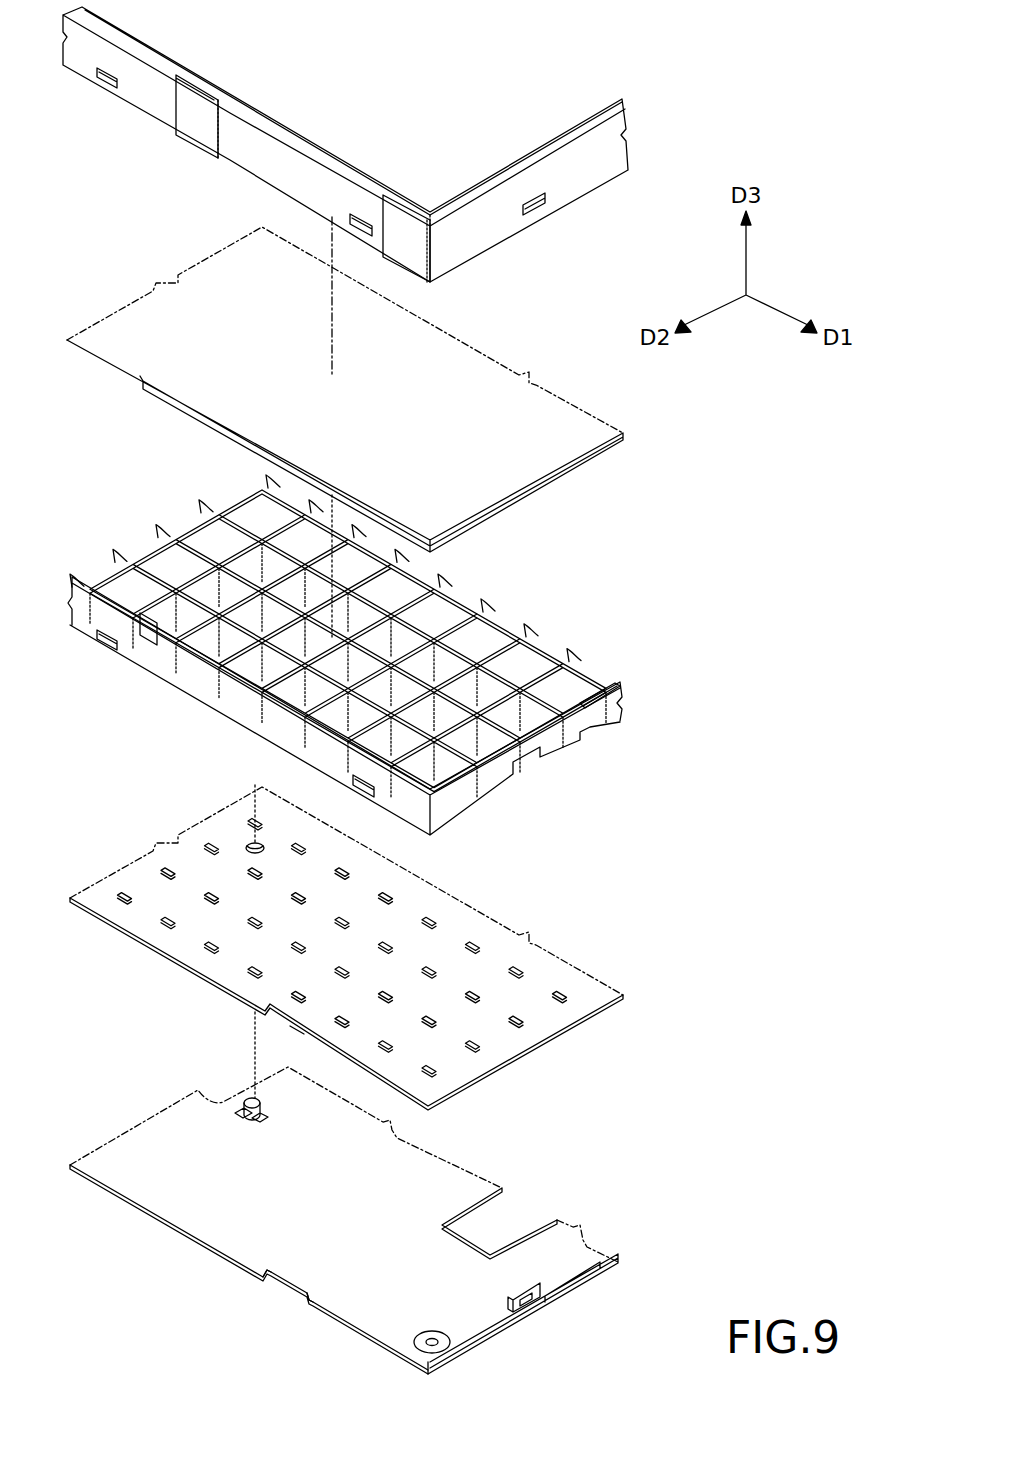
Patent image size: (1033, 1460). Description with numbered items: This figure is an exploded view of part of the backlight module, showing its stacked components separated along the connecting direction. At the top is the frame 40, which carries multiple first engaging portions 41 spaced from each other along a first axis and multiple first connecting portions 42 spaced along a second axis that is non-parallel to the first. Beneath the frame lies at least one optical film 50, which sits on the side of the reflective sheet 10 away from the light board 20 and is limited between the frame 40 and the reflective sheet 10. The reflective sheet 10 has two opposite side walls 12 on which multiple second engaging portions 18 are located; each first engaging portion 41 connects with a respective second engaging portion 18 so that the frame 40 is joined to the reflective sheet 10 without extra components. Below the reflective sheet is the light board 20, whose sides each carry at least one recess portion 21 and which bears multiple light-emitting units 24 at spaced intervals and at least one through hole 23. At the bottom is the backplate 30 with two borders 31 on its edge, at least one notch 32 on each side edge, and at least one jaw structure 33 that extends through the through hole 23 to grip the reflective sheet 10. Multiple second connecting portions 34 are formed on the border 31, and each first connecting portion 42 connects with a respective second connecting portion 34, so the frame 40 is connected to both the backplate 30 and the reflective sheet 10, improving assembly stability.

The reflective sheet 10 is at (588, 634).
The side walls 12 is at (163, 665).
The second engaging portions 18 is at (98, 640).
The light board 20 is at (575, 945).
The recess portion 21 is at (300, 1022).
The through hole 23 is at (254, 842).
The light-emitting units 24 is at (168, 922).
The backplate 30 is at (580, 1222).
The borders 31 is at (493, 1335).
The notch 32 is at (290, 1285).
The jaw structure 33 is at (250, 1125).
The second connecting portions 34 is at (530, 1300).
The frame 40 is at (652, 113).
The first engaging portions 41 is at (102, 78).
The first connecting portions 42 is at (541, 215).
The optical film 50 is at (597, 475).